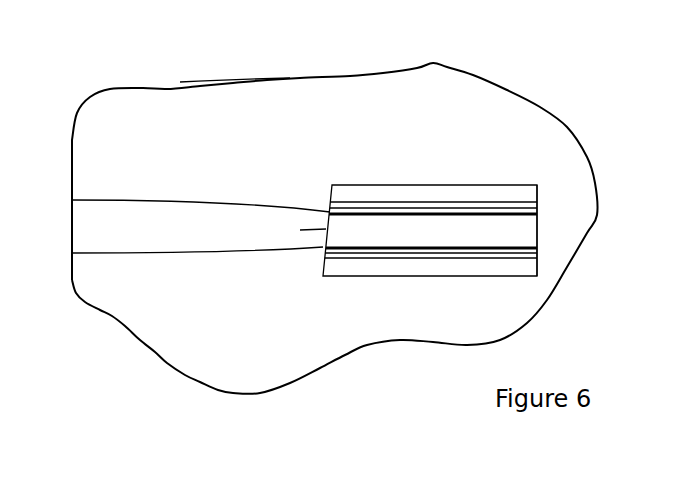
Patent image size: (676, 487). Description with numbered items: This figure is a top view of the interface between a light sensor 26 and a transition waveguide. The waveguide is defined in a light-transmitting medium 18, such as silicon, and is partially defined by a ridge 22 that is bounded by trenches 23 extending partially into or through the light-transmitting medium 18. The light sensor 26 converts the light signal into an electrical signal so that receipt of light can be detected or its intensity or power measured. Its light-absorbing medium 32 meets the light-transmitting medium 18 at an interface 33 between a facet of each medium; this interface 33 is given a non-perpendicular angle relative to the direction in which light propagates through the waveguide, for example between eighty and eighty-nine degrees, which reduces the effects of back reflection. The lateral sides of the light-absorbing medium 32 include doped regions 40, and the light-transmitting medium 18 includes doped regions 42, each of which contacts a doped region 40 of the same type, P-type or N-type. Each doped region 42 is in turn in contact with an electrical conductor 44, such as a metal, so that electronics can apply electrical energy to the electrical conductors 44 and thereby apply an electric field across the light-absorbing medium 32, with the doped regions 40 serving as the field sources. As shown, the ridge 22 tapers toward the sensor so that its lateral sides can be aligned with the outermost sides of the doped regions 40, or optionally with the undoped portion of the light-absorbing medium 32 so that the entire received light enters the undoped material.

The light-transmitting medium 18 is at (110, 117).
The ridge 22 is at (153, 254).
The trenches 23 is at (237, 100).
The light sensor 26 is at (375, 138).
The light-absorbing medium 32 is at (540, 233).
The interface 33 is at (300, 230).
The doped regions 40 is at (395, 246).
The doped regions 42 is at (338, 207).
The electrical conductor 44 is at (413, 190).